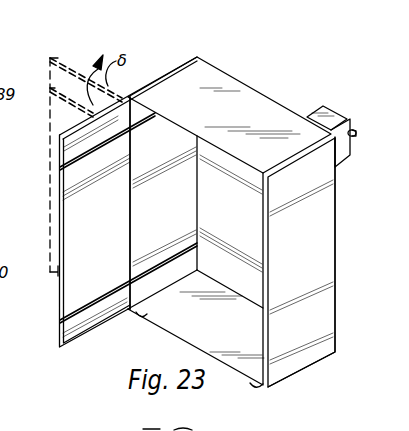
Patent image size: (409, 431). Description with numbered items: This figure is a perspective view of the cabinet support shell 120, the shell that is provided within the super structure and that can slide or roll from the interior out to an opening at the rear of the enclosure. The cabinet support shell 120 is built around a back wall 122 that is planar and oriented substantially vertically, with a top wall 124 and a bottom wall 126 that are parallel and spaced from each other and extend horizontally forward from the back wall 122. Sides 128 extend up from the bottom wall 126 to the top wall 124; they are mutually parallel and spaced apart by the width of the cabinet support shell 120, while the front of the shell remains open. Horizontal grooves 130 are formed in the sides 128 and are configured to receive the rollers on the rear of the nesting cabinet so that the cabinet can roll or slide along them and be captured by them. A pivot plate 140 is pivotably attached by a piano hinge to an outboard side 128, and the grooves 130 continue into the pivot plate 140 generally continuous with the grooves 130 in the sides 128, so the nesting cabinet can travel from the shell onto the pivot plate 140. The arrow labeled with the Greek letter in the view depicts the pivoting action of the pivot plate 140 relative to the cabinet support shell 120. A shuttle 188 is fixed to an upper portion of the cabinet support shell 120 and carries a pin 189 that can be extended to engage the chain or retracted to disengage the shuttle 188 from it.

The cabinet support shell 120 is at (322, 383).
The back wall 122 is at (251, 222).
The top wall 124 is at (238, 118).
The bottom wall 126 is at (236, 331).
The sides 128 is at (173, 198).
The grooves 130 is at (62, 166).
The pivot plates 140 is at (112, 221).
The shuttle 188 is at (322, 116).
The pin 189 is at (352, 130).